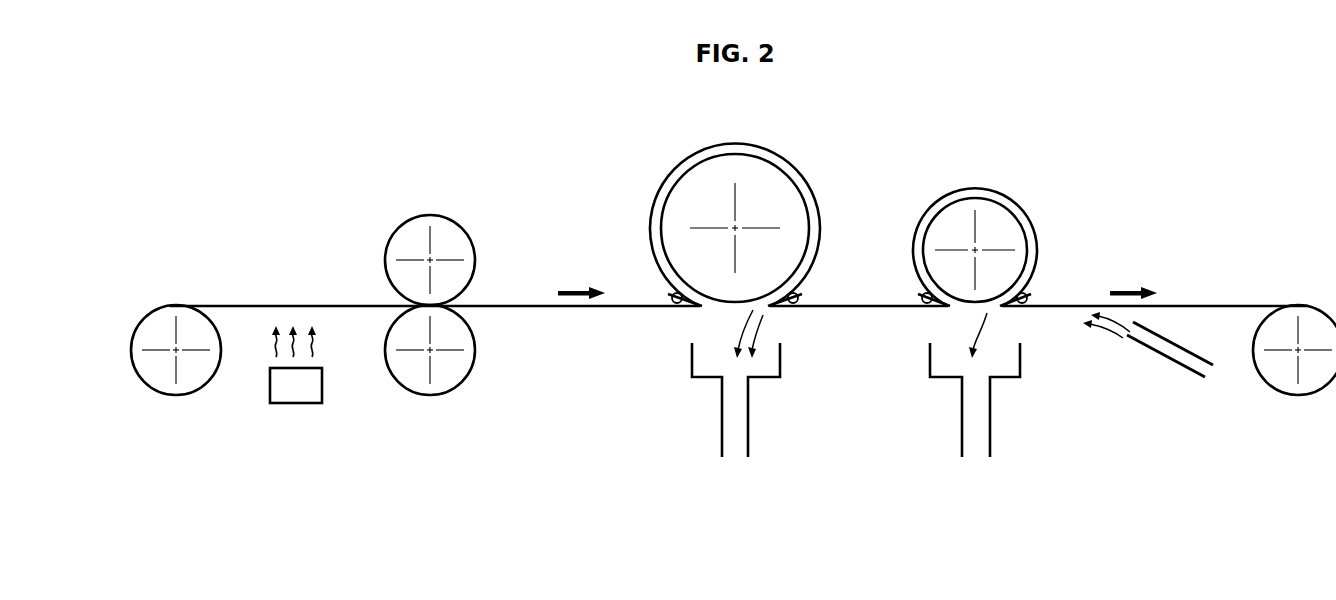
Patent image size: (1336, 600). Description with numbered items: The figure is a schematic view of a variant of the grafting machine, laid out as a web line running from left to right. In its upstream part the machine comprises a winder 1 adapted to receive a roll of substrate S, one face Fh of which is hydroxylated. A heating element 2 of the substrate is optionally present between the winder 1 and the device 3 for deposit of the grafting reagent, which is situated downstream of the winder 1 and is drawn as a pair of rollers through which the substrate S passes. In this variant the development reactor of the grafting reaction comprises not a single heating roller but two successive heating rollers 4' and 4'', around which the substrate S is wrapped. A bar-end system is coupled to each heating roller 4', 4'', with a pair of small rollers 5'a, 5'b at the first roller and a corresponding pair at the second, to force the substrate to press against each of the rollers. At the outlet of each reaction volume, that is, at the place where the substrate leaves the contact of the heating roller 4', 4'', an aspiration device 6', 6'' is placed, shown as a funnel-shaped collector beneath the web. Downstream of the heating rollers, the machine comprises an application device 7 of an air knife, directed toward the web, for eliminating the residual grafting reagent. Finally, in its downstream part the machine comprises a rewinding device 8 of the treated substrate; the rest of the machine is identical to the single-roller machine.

The substrate S is at (235, 290).
The hydroxylated face Fh is at (256, 326).
The winder 1 is at (178, 395).
The heating element 2 is at (322, 383).
The device for deposit of the grafting reagent 3 is at (497, 226).
The first heating roller 4' is at (735, 206).
The bar-end system of the first heating roller 5'a is at (639, 282).
The bar-end system of the first heating roller 5'b is at (825, 285).
The aspiration device 6' is at (764, 383).
The second heating roller 4'' is at (976, 220).
The aspiration device 6'' is at (1004, 385).
The application device of an air knife 7 is at (1158, 353).
The rewinding device 8 is at (1298, 393).